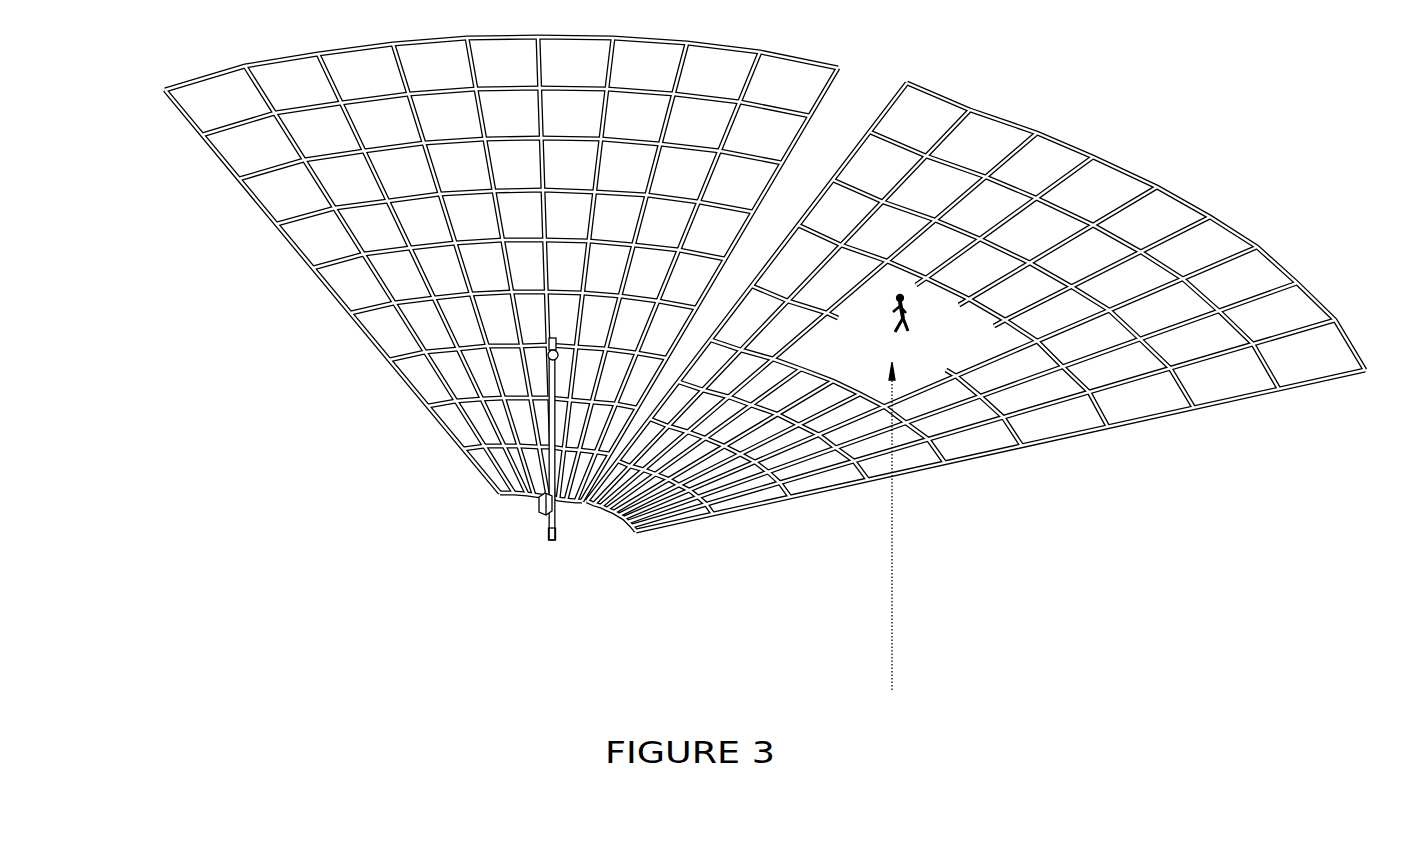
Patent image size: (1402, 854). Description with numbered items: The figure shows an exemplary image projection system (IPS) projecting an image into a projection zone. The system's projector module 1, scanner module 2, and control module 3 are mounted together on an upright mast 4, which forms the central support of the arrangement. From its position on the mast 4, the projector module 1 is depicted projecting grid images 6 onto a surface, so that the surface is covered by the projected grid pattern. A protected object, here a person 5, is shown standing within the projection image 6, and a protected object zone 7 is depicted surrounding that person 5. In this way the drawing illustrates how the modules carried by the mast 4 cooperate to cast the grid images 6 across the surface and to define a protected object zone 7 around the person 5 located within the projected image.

The projector module 1 is at (547, 364).
The scanner module 2 is at (545, 348).
The control module 3 is at (532, 519).
The mast 4 is at (548, 538).
The protected object (person) 5 is at (910, 340).
The grid images 6 is at (950, 466).
The protected object zone 7 is at (896, 534).